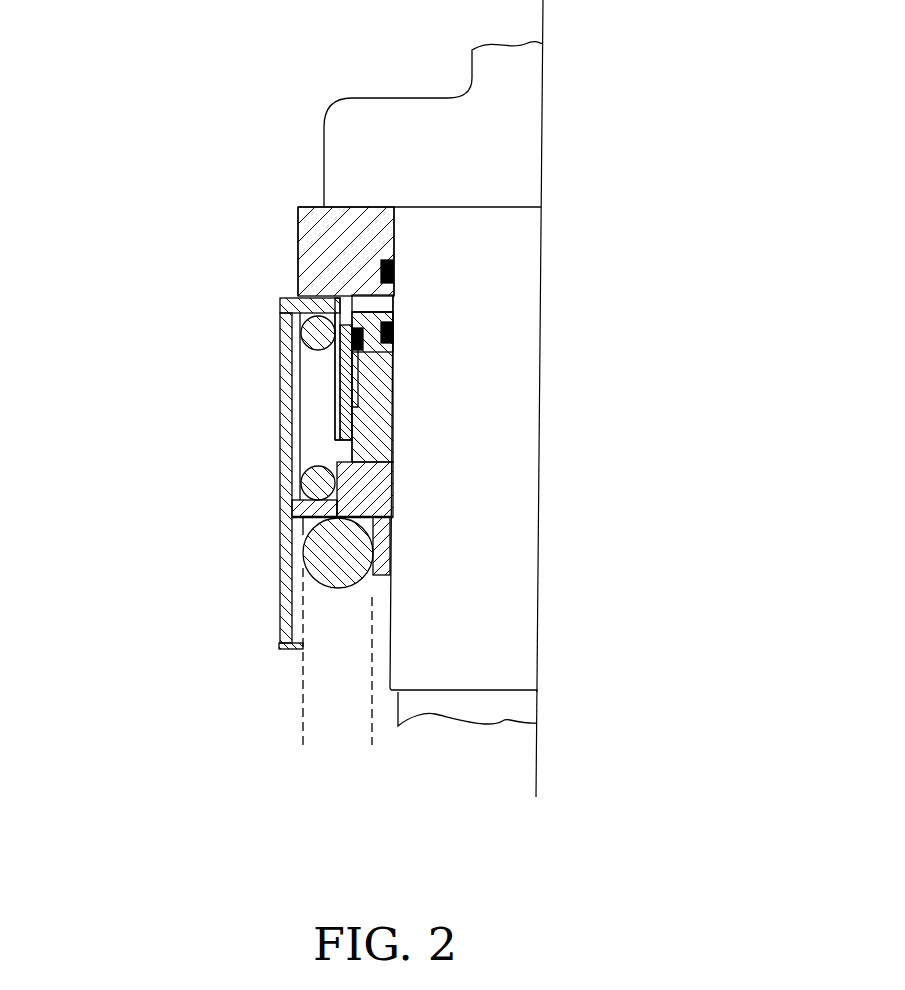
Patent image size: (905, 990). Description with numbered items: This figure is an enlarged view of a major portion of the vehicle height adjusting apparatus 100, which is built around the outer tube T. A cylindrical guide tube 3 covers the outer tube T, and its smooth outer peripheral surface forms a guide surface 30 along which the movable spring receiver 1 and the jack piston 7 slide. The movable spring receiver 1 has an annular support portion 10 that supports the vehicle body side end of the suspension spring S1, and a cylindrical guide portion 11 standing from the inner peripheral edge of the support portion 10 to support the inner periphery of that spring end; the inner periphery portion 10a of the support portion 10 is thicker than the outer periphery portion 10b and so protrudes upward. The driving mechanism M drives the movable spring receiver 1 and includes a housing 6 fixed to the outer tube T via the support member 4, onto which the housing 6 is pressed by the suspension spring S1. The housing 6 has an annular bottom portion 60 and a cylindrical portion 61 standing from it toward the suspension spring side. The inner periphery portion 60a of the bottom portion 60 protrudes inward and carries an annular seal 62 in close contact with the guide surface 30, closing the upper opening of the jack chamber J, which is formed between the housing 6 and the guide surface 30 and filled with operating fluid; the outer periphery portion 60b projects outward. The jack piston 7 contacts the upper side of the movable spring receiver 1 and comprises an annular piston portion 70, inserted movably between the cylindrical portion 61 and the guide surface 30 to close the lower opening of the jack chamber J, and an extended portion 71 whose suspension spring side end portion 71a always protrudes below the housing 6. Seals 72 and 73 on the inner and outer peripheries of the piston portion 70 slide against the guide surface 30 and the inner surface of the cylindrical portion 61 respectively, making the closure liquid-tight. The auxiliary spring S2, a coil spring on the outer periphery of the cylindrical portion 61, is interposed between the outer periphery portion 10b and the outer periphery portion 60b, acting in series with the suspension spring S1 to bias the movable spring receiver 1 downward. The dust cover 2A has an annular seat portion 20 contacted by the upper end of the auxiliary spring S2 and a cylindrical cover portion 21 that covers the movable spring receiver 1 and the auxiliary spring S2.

The vehicle height adjusting apparatus 100 is at (138, 203).
The support member 4 is at (413, 110).
The housing 6 is at (296, 196).
The bottom portion 60 is at (352, 203).
The inner periphery portion 60a is at (400, 235).
The outer periphery portion 60b is at (298, 244).
The seat portion 20 is at (298, 268).
The seal 62 is at (394, 266).
The auxiliary spring S2 is at (300, 328).
The jack chamber J is at (394, 306).
The outer peripheral side seal 73 is at (292, 352).
The inner peripheral side seal 72 is at (394, 331).
The piston portion 70 is at (394, 360).
The driving mechanism M is at (320, 377).
The jack piston 7 is at (402, 395).
The cylindrical portion 61 is at (340, 402).
The extended portion 71 is at (394, 434).
The cover portion 21 is at (283, 453).
The suspension spring side end portion 71a is at (394, 476).
The support portion 10 is at (283, 507).
The inner periphery portion 10a is at (396, 504).
The guide surface 30 is at (515, 484).
The outer periphery portion 10b is at (300, 527).
The movable spring receiver 1 is at (408, 523).
The suspension spring S1 is at (300, 553).
The guide portion 11 is at (392, 546).
The dust cover 2A is at (276, 638).
The guide tube 3 is at (380, 673).
The outer tube T is at (500, 713).